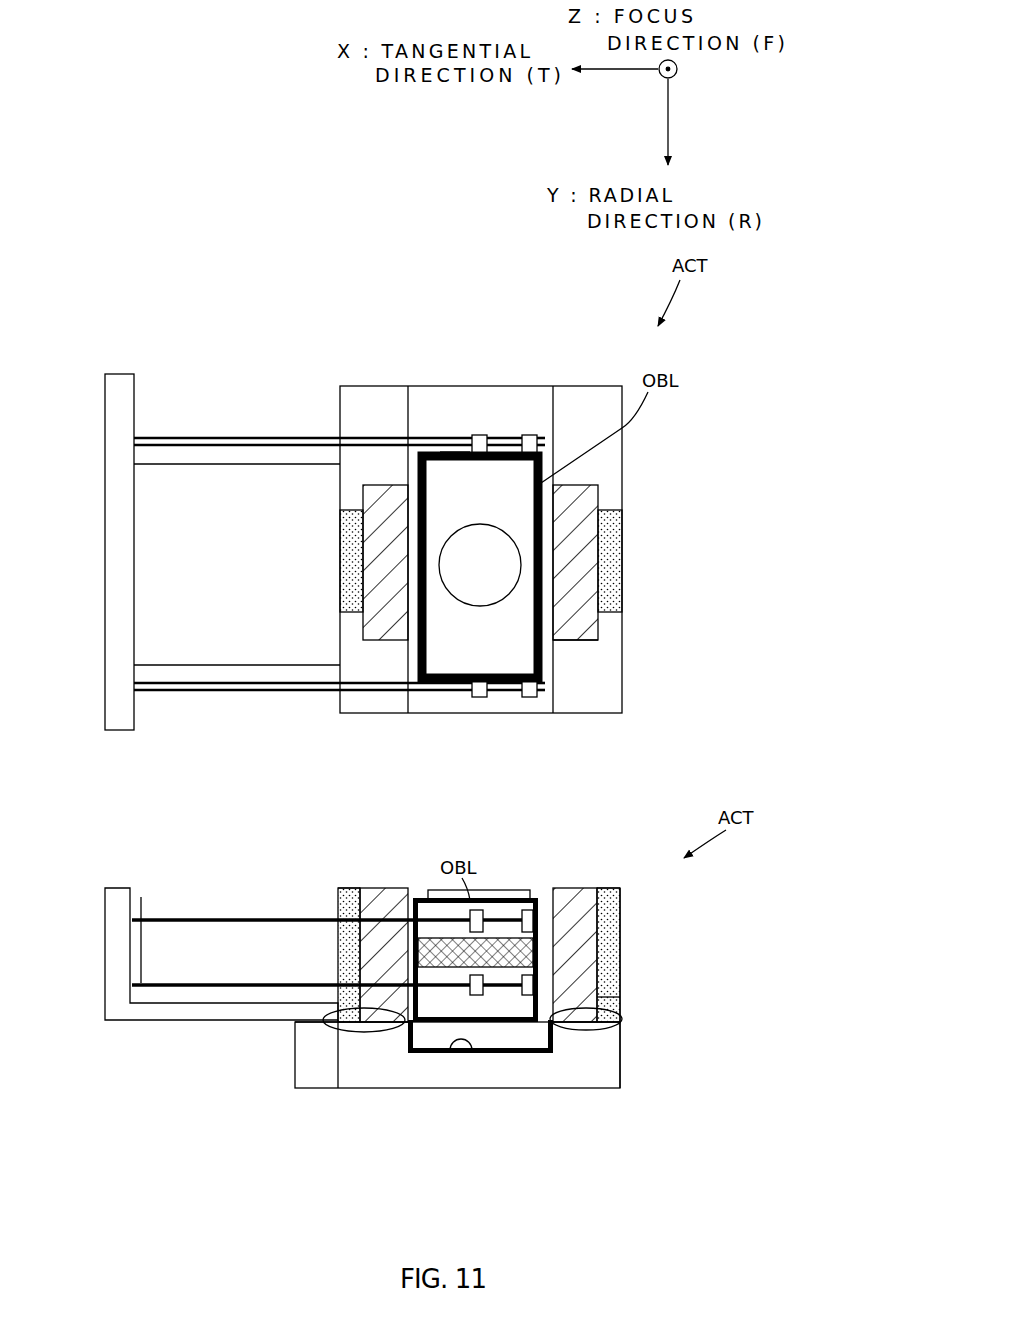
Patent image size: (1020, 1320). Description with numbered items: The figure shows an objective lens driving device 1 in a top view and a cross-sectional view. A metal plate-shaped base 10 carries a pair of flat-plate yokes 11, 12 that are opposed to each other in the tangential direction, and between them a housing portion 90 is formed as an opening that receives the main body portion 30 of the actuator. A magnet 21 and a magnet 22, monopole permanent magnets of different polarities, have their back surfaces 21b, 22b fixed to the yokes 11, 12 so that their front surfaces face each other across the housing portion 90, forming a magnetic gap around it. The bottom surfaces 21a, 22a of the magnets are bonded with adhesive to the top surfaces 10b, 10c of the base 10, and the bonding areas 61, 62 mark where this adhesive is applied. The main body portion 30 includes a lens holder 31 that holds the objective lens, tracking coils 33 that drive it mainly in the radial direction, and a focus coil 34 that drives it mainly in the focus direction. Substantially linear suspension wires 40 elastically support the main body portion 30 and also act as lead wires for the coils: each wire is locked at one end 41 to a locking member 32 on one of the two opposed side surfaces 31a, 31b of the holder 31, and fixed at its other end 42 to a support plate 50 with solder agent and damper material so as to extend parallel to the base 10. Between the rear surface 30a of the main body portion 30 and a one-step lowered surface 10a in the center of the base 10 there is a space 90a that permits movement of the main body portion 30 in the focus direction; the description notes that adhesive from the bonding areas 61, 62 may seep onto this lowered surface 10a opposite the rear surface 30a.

The objective lens driving device 1 is at (447, 260).
The base 10 is at (622, 447).
The one-step lowered surface 10a is at (453, 1054).
The top surface of base 10b is at (298, 1022).
The top surface of base 10c is at (620, 997).
The yoke 11 is at (352, 613).
The yoke 12 is at (623, 700).
The magnet 21 is at (384, 641).
The bottom surface of magnet 21a is at (360, 1035).
The back surface of magnet 21b is at (338, 900).
The magnet 22 is at (616, 613).
The bottom surface of magnet 22a is at (583, 1030).
The back surface of magnet 22b is at (598, 900).
The actuator main body portion 30 is at (543, 438).
The rear surface of main body portion 30a is at (500, 1022).
The lens holder 31 is at (430, 452).
The side surface of holder 31a is at (432, 697).
The side surface of holder 31b is at (445, 452).
The locking member 32 is at (531, 418).
The tracking coil 33 is at (412, 460).
The focus coil 34 is at (540, 958).
The suspension wire 40 is at (224, 437).
The end of suspension wire 41 is at (451, 437).
The end of suspension wire 42 is at (178, 437).
The support plate 50 is at (128, 374).
The bonding area 61 is at (335, 1035).
The bonding area 62 is at (624, 1020).
The housing portion 90 is at (590, 641).
The space 90a is at (405, 1025).